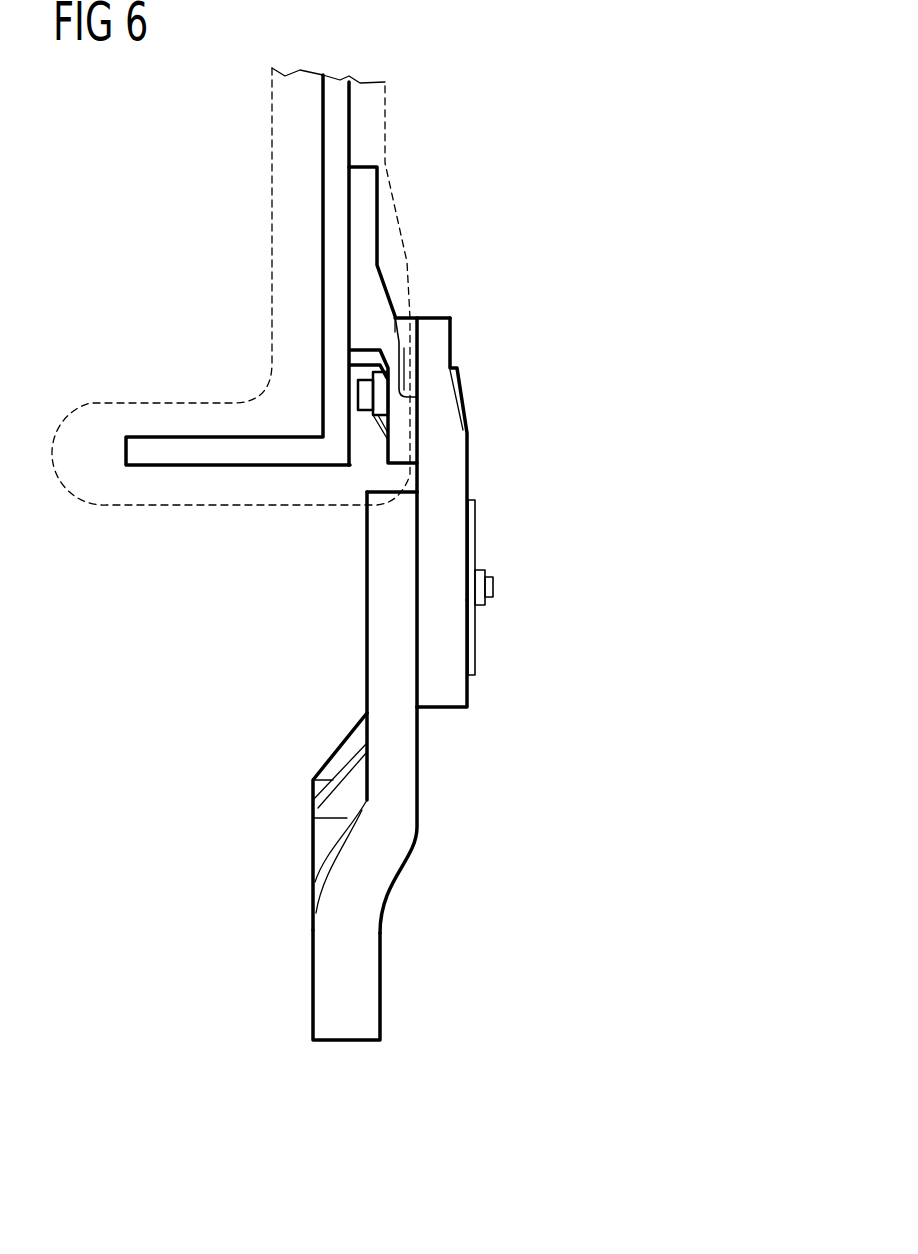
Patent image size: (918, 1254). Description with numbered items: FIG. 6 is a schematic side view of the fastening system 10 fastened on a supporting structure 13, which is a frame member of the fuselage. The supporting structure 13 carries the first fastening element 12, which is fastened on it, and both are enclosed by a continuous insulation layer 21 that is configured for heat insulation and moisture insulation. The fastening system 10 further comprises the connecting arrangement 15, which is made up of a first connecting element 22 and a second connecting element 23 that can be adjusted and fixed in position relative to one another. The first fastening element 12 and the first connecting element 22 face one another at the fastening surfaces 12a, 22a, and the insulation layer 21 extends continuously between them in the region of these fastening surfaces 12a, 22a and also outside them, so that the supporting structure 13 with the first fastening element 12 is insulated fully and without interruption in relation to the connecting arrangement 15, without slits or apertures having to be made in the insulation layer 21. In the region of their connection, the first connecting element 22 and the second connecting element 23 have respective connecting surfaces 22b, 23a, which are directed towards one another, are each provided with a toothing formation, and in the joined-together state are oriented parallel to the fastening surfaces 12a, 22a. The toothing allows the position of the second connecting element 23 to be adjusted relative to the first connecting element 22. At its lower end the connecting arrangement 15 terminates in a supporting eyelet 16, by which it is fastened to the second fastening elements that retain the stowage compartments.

The fastening system 10 is at (535, 98).
The first fastening element 12 is at (391, 202).
The fastening surface 12a is at (423, 323).
The supporting structure 13 is at (365, 126).
The connecting arrangement 15 is at (164, 638).
The supporting eyelet 16 is at (347, 1040).
The insulation layer 21 is at (259, 311).
The first connecting element 22 is at (481, 438).
The fastening surface 22a is at (423, 323).
The connecting surface 22b is at (417, 657).
The second connecting element 23 is at (418, 790).
The connecting surface 23a is at (417, 657).